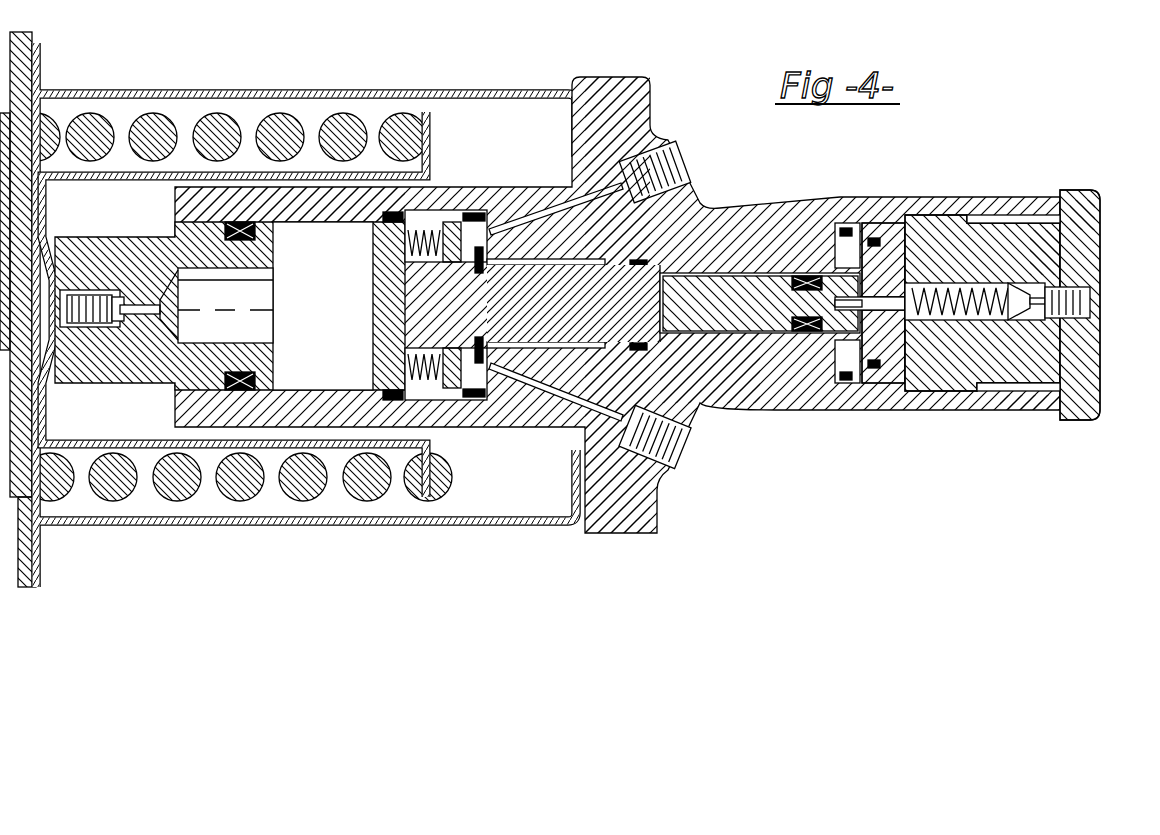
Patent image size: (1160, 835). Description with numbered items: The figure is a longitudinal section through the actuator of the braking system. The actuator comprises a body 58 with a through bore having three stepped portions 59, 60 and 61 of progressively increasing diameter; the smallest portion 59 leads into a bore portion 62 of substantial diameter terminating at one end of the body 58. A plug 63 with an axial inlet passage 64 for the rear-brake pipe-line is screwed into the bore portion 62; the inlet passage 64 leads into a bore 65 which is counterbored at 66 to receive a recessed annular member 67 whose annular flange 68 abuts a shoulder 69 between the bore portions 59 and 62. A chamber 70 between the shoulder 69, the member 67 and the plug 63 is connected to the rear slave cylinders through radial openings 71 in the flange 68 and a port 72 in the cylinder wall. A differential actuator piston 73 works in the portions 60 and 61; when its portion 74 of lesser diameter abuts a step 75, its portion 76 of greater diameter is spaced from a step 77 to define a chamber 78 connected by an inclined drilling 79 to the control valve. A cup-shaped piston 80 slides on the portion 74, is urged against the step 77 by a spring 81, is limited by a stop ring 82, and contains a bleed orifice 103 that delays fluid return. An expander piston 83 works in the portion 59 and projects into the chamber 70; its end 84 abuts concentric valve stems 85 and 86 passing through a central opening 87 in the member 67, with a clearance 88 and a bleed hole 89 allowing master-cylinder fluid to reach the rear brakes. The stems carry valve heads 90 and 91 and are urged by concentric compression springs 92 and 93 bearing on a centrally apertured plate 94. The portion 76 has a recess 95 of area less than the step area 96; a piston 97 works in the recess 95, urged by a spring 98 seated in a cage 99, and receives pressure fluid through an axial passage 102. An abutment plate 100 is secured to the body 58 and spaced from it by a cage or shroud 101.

The body 58 is at (730, 230).
The smallest diameter bore portion 59 is at (780, 275).
The intermediate bore portion 60 is at (605, 260).
The largest bore portion 61 is at (413, 212).
The bore portion of substantial diameter 62 is at (935, 285).
The plug 63 is at (990, 300).
The axial inlet passage 64 is at (1045, 301).
The bore 65 is at (1000, 260).
The counterbore 66 is at (880, 265).
The recessed annular member 67 is at (875, 232).
The annular flange 68 is at (866, 370).
The shoulder 69 is at (808, 332).
The chamber 70 is at (885, 360).
The radial openings 71 is at (848, 350).
The port 72 is at (842, 230).
The differential actuator piston 73 is at (543, 320).
The piston portion of lesser diameter 74 is at (587, 323).
The step 75 is at (690, 380).
The piston portion of greater diameter 76 is at (383, 375).
The step 77 is at (492, 380).
The chamber 78 is at (440, 398).
The inclined drilling 79 is at (672, 448).
The cup-shaped piston 80 is at (470, 387).
The spring 81 is at (412, 382).
The stop ring 82 is at (472, 222).
The expander piston 83 is at (725, 315).
The end of expander piston 84 is at (880, 345).
The inner valve stem 85 is at (1068, 412).
The outer valve stem 86 is at (905, 335).
The central opening 87 is at (888, 345).
The clearance 88 is at (895, 300).
The bleed hole 89 is at (980, 219).
The valve head 90 is at (1020, 387).
The valve head 91 is at (1025, 408).
The compression spring 92 is at (1045, 265).
The compression spring 93 is at (1088, 215).
The centrally apertured plate 94 is at (1070, 312).
The recess 95 is at (298, 270).
The step area 96 is at (432, 165).
The piston 97 is at (110, 265).
The spring 98 is at (165, 140).
The cage 99 is at (185, 480).
The abutment plate 100 is at (20, 211).
The cage or shroud 101 is at (142, 523).
The axial passage 102 is at (138, 307).
The orifice 103 is at (447, 427).